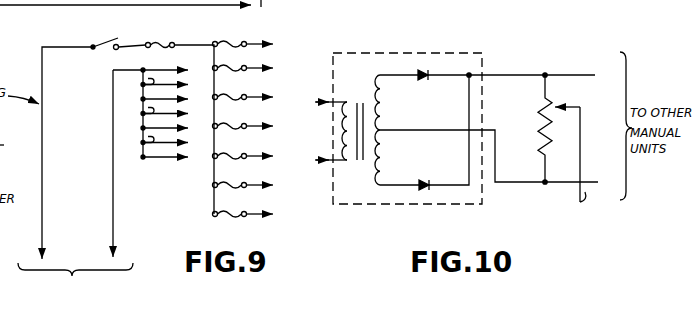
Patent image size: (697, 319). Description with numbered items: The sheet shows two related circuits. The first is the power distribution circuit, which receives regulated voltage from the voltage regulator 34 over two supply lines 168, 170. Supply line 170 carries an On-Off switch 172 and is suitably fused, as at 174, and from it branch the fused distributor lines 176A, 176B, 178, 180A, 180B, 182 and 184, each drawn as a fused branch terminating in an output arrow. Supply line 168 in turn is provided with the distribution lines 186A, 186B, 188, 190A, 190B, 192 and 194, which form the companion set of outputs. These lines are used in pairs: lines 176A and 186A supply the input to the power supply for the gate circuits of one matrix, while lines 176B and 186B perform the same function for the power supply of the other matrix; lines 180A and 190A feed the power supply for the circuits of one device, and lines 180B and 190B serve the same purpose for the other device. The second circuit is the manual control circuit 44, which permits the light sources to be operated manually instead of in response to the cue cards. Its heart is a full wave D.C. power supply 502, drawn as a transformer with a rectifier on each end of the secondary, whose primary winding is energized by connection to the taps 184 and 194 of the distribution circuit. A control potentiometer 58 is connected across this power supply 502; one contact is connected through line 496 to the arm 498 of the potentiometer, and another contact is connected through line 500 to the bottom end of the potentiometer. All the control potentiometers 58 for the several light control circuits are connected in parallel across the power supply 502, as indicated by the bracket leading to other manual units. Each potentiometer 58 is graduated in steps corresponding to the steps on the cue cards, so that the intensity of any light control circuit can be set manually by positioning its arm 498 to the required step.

In FIG. 9, the voltage regulator 34 is at (79, 263).
In FIG. 10, the manual control circuit 44 is at (495, 64).
In FIG. 10, the control potentiometer 58 is at (537, 120).
In FIG. 9, the supply line 168 is at (118, 227).
In FIG. 9, the supply line 170 is at (45, 218).
In FIG. 9, the On-Off switch 172 is at (105, 39).
In FIG. 9, the fuse 174 is at (160, 42).
In FIG. 9, the fused distributor line 176A is at (247, 42).
In FIG. 9, the fused distributor line 176B is at (257, 66).
In FIG. 9, the fused distributor line 178 is at (257, 95).
In FIG. 9, the fused distributor line 180A is at (257, 124).
In FIG. 9, the fused distributor line 180B is at (256, 147).
In FIG. 9, the fused distributor line 182 is at (255, 184).
In FIG. 9, the fused distributor line 184 is at (256, 213).
In FIG. 10, the fused distributor line 184 is at (332, 99).
In FIG. 9, the distribution line 186A is at (157, 64).
In FIG. 9, the distribution line 186B is at (143, 84).
In FIG. 9, the distribution line 188 is at (143, 99).
In FIG. 9, the distribution line 190A is at (143, 114).
In FIG. 9, the distribution line 190B is at (143, 128).
In FIG. 9, the distribution line 192 is at (143, 142).
In FIG. 9, the distribution line 194 is at (147, 158).
In FIG. 10, the distribution line 194 is at (318, 163).
In FIG. 10, the line 496 is at (585, 167).
In FIG. 10, the arm 498 is at (560, 106).
In FIG. 10, the line 500 is at (543, 187).
In FIG. 10, the full wave D.C. power supply 502 is at (393, 37).